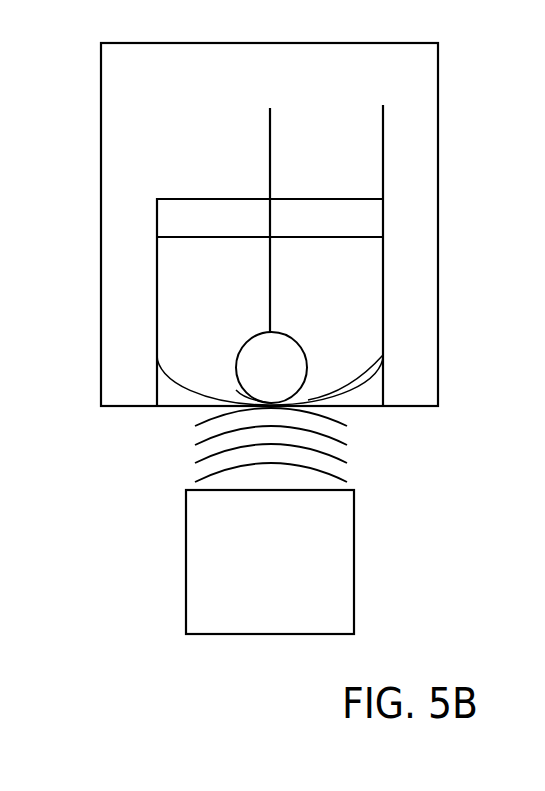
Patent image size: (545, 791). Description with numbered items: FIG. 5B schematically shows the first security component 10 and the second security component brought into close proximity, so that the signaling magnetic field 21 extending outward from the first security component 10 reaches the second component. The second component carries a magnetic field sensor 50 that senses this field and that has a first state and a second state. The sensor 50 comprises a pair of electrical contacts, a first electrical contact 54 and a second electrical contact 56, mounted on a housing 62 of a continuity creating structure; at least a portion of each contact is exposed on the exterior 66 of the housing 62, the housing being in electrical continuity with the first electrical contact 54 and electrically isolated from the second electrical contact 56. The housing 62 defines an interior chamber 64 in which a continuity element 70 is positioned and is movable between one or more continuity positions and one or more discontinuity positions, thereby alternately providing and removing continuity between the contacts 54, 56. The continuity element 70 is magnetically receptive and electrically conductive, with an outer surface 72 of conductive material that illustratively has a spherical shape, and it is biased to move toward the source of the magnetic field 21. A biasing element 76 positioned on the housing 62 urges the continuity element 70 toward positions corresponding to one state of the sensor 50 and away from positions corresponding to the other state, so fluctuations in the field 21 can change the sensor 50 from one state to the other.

The first security component 10 is at (354, 512).
The signaling magnetic field 21 is at (168, 458).
The magnetic field sensor 50 is at (438, 62).
The first electrical contact 54 is at (383, 141).
The second electrical contact 56 is at (268, 118).
The housing 62 is at (383, 327).
The interior chamber 64 is at (365, 270).
The exterior 66 is at (383, 355).
The continuity element 70 is at (236, 352).
The outer surface 72 is at (235, 367).
The biasing element 76 is at (383, 216).